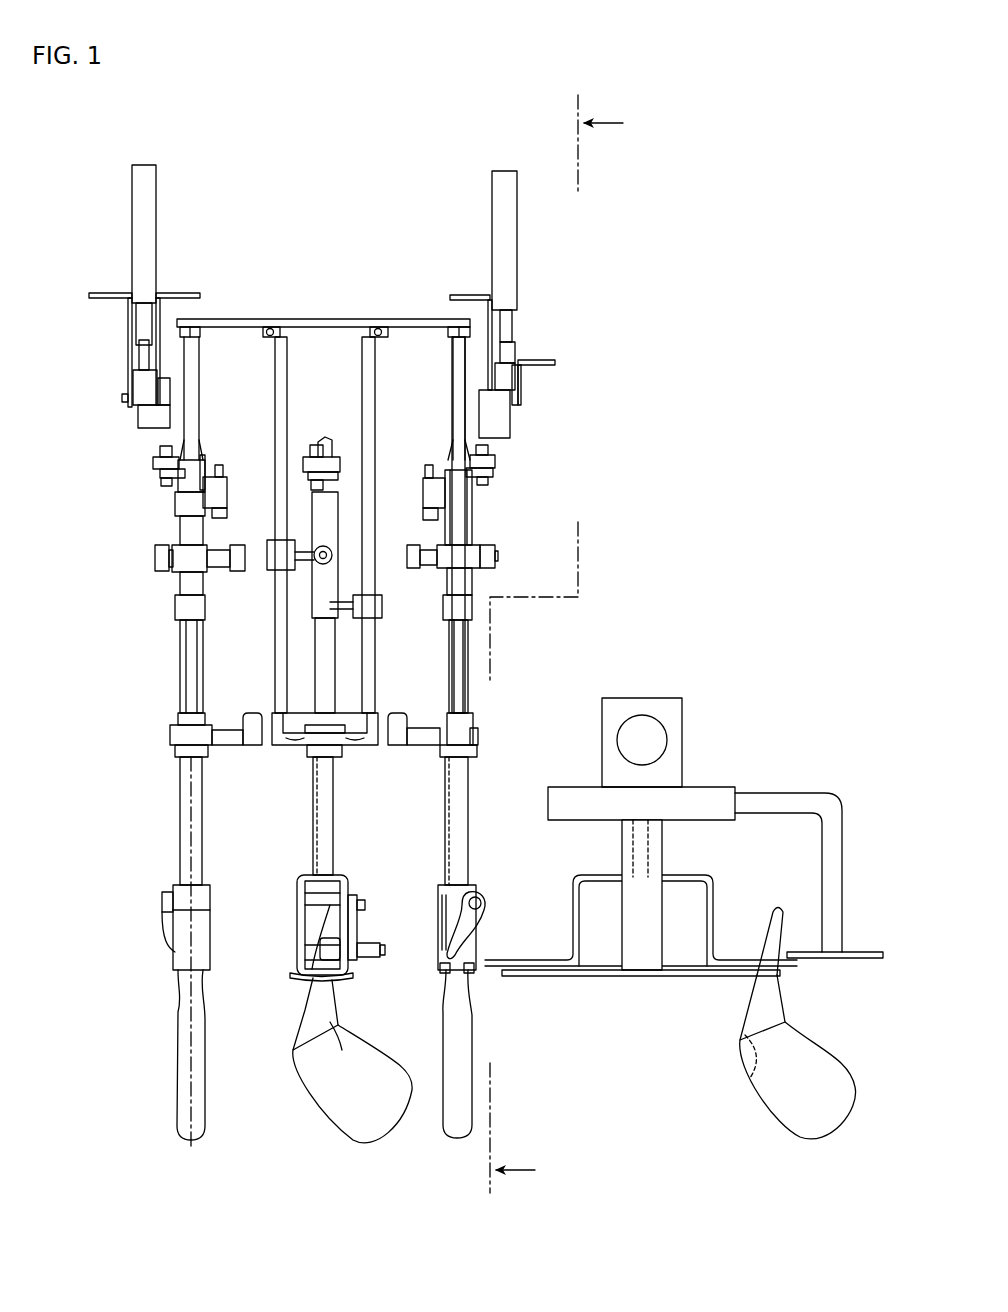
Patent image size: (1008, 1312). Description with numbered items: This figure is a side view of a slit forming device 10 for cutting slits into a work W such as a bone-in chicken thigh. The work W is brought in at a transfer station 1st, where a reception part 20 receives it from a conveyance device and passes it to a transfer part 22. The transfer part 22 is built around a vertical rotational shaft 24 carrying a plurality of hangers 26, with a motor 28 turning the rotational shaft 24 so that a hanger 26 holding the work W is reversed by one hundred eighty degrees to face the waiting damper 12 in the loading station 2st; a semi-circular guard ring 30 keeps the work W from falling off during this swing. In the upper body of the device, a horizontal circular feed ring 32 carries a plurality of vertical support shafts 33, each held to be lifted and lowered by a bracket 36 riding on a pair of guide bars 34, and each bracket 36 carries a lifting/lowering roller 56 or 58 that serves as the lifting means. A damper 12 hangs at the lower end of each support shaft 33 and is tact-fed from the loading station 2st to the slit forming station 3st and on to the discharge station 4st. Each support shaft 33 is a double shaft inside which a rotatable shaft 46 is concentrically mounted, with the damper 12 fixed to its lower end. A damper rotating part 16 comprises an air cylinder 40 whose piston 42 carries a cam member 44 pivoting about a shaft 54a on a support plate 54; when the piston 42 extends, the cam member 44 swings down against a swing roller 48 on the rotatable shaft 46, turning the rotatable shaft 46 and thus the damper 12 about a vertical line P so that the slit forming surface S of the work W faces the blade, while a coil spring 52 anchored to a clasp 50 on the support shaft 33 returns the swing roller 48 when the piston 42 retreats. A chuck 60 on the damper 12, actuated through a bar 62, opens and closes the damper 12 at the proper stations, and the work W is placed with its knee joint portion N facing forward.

The slit forming device 10 is at (396, 127).
The damper 12 is at (149, 933).
The damper rotating part 16 is at (98, 214).
The reception part 20 is at (862, 948).
The transfer part 22 is at (728, 891).
The rotational shaft 24 is at (637, 840).
The hanger 26 is at (548, 958).
The motor 28 is at (634, 722).
The guard ring 30 is at (588, 977).
The feed ring 32 is at (250, 319).
The support shaft 33 is at (331, 832).
The guide bars 34 is at (363, 403).
The bracket 36 is at (376, 608).
The air cylinder 40 is at (148, 205).
The piston 42 is at (135, 323).
The cam member 44 is at (143, 412).
The rotatable shaft 46 is at (326, 438).
The swing roller 48 is at (155, 462).
The clasp 50 is at (221, 468).
The coil spring 52 is at (206, 480).
The support plate 54 is at (108, 293).
The shaft 54a is at (120, 397).
The lifting/lowering roller 56 is at (238, 568).
The lifting/lowering roller 58 is at (165, 568).
The chuck 60 is at (480, 920).
The bar 62 is at (372, 953).
The vertical line P is at (190, 832).
The slit forming surface S is at (178, 1057).
The work W is at (301, 1086).
The knee joint portion N is at (739, 1058).
The transfer station 1st is at (768, 750).
The loading station 2st is at (503, 577).
The slit forming station 3st is at (343, 1150).
The discharge station 4st is at (131, 561).